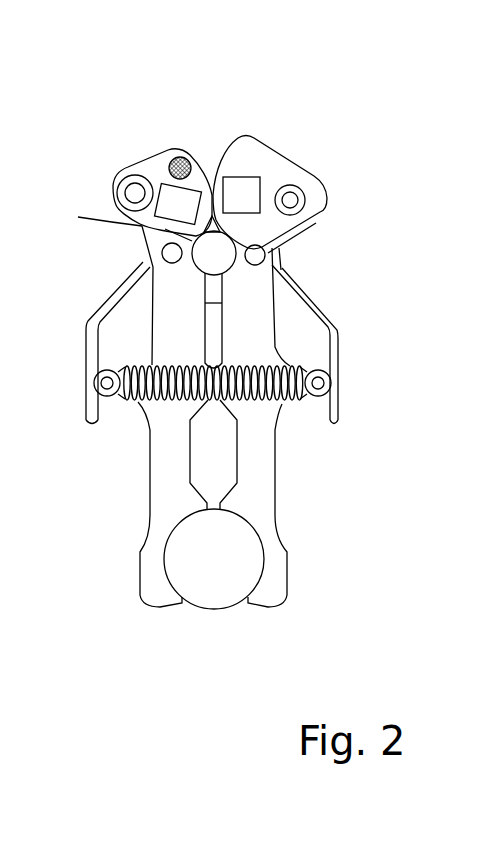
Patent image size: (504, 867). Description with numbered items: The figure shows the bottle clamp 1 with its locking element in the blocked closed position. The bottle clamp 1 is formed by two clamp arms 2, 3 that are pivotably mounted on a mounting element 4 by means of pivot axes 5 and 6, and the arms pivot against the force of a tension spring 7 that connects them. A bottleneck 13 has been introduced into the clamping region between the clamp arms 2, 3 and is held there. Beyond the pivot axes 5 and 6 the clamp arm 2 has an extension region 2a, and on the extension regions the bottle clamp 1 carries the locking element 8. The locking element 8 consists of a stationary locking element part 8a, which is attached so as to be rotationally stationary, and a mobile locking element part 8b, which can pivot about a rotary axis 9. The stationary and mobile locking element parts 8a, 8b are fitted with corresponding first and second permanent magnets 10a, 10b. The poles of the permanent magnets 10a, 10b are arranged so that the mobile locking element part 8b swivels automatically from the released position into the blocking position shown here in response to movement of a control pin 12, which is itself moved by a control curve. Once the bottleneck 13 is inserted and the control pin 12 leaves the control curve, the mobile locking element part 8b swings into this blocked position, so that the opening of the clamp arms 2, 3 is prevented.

The bottle clamp 1 is at (365, 250).
The clamp arm 2 is at (262, 460).
The extension region 2a is at (302, 227).
The clamp arm 3 is at (162, 457).
The mounting element 4 is at (302, 300).
The pivot axis 5 is at (273, 238).
The pivot axis 6 is at (160, 250).
The tension spring 7 is at (285, 370).
The locking element 8 is at (211, 131).
The stationary locking element part 8a is at (248, 157).
The mobile locking element part 8b is at (152, 167).
The rotary axis 9 is at (115, 188).
The first permanent magnet 10a is at (247, 185).
The second permanent magnet 10b is at (170, 185).
The control pin 12 is at (183, 157).
The bottleneck 13 is at (232, 572).